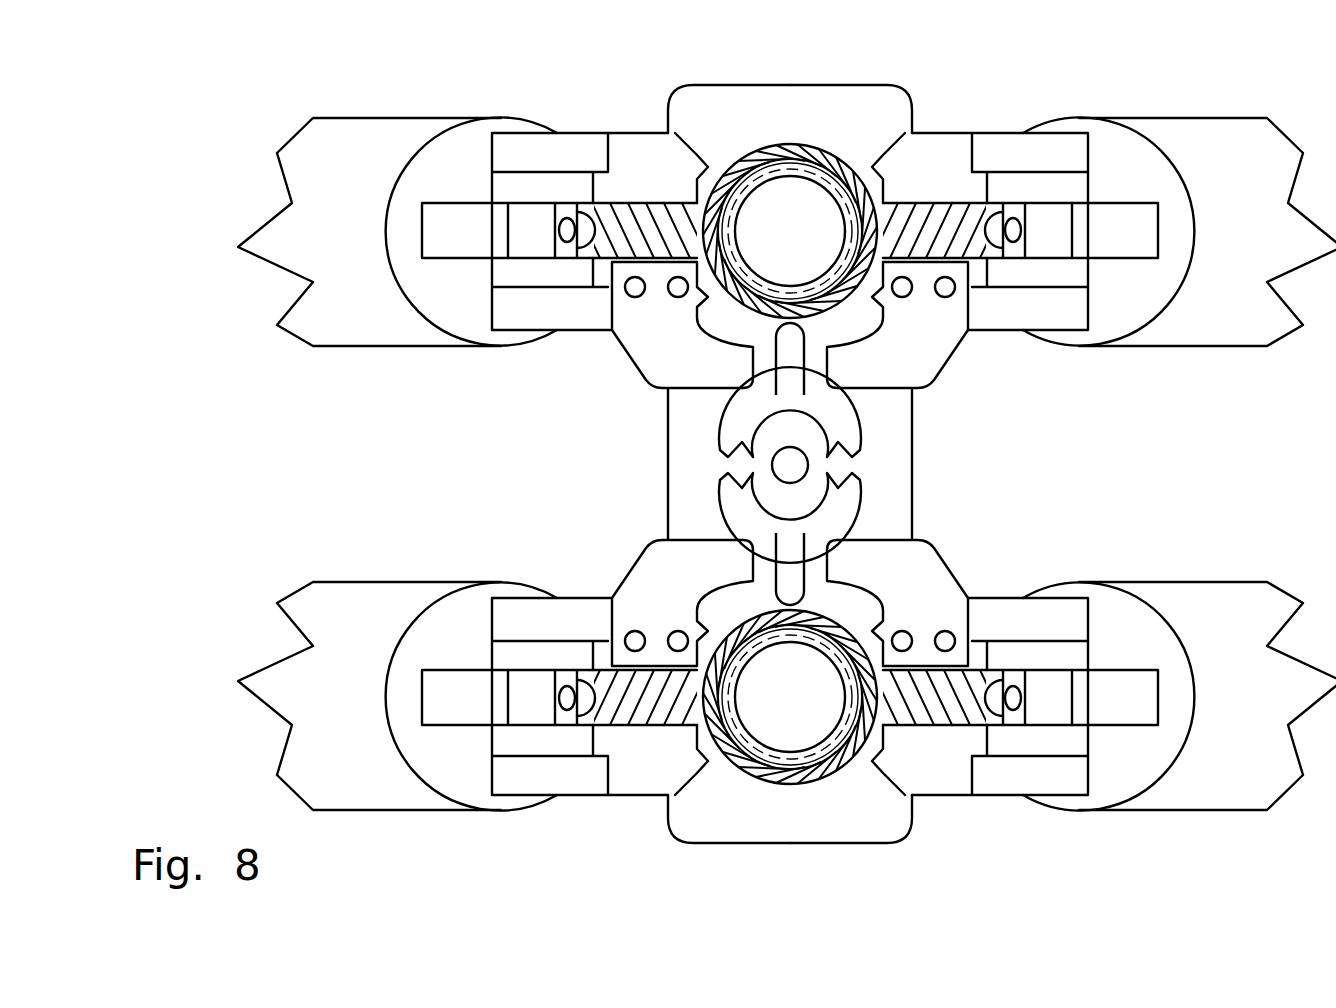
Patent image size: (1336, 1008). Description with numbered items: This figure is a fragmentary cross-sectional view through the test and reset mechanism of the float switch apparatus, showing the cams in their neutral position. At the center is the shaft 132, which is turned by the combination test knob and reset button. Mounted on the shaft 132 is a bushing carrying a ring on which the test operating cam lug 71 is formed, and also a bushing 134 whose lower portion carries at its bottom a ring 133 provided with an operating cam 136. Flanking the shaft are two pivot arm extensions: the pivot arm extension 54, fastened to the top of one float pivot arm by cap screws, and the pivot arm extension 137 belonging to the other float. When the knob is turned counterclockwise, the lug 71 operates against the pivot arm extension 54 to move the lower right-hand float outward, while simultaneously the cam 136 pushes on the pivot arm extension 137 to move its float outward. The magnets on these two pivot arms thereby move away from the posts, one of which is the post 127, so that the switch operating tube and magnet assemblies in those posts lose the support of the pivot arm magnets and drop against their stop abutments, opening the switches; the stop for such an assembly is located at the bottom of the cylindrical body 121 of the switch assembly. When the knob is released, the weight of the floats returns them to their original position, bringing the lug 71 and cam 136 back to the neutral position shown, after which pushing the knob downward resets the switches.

The pivot arm extension 54 is at (943, 598).
The test operating cam lug 71 is at (788, 588).
The cylindrical body of the switch assembly 121 is at (812, 768).
The post 127 is at (782, 148).
The shaft 132 is at (790, 467).
The ring 133 is at (743, 425).
The bushing 134 is at (792, 435).
The operating cam 136 is at (790, 340).
The pivot arm extension 137 is at (643, 347).